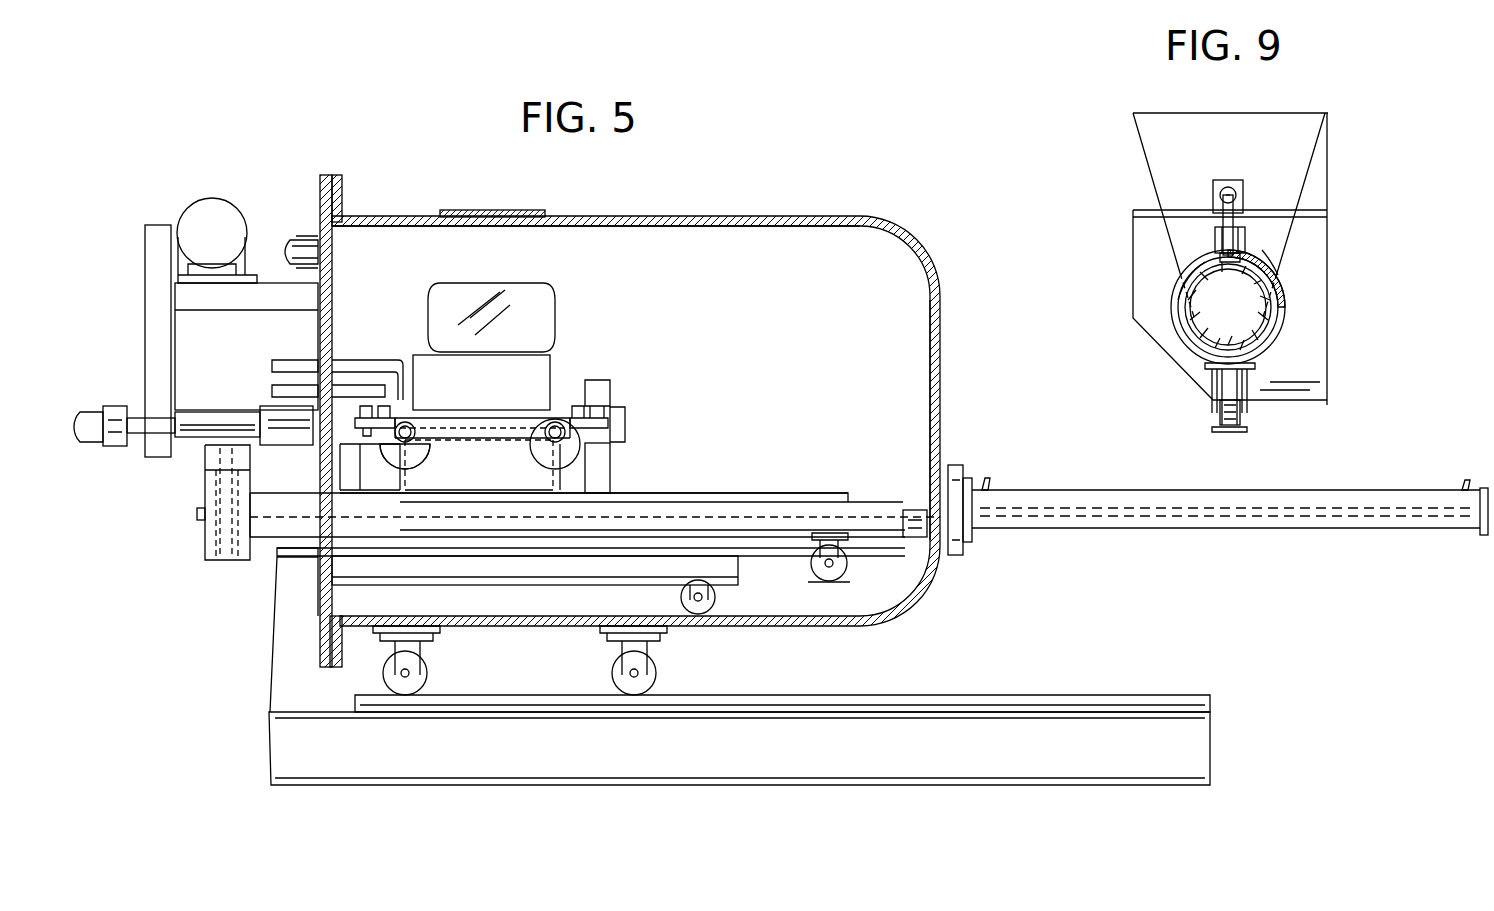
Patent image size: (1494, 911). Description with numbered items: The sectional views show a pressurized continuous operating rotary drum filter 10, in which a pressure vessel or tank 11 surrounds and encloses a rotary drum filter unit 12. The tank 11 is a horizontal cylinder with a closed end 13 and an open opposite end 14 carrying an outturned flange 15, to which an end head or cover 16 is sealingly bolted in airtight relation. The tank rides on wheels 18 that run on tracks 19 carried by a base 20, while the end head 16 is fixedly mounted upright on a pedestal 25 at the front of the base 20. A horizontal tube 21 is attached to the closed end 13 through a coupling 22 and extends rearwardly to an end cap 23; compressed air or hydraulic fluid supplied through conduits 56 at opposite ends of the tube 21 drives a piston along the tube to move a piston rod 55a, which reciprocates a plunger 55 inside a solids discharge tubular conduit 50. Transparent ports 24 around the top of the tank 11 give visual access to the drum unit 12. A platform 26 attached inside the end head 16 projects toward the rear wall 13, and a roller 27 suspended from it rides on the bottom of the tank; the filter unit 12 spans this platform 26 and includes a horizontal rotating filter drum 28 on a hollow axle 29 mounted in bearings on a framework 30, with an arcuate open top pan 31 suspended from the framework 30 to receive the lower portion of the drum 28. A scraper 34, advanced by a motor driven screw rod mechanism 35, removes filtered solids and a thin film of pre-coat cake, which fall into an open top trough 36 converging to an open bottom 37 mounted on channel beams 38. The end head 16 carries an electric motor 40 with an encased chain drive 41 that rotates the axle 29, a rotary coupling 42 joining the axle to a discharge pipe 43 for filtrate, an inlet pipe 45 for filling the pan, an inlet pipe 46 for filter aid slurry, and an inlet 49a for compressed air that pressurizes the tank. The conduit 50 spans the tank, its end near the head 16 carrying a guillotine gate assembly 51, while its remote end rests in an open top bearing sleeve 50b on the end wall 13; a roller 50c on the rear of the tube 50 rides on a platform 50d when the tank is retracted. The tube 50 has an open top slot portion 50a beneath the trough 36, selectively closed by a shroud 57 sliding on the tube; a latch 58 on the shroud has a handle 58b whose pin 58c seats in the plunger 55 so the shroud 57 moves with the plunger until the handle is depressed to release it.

In FIG. 5, the pressurized continuous operating rotary drum filter 10 is at (806, 216).
In FIG. 5, the tank 11 is at (572, 220).
In FIG. 5, the rotary drum filter unit 12 is at (540, 370).
In FIG. 5, the closed end 13 is at (940, 305).
In FIG. 5, the open opposite end 14 is at (338, 243).
In FIG. 5, the outturned flange 15 is at (342, 188).
In FIG. 5, the end head 16 is at (318, 195).
In FIG. 5, the wheels 18 is at (428, 676).
In FIG. 5, the tracks 19 is at (862, 712).
In FIG. 5, the base 20 is at (966, 760).
In FIG. 5, the horizontal tube 21 is at (1088, 495).
In FIG. 5, the coupling 22 is at (955, 468).
In FIG. 5, the end cap 23 is at (1484, 486).
In FIG. 5, the transparent ports 24 is at (492, 217).
In FIG. 5, the pedestal 25 is at (287, 630).
In FIG. 5, the platform 26 is at (630, 568).
In FIG. 5, the roller 27 is at (716, 598).
In FIG. 5, the filter drum 28 is at (405, 418).
In FIG. 5, the axle 29 is at (214, 420).
In FIG. 5, the framework 30 is at (550, 548).
In FIG. 5, the arcuate open top pan 31 is at (508, 486).
In FIG. 5, the scraper 34 is at (470, 422).
In FIG. 5, the motor driven screw rod mechanism 35 is at (563, 420).
In FIG. 9, the open top trough 36 is at (1327, 150).
In FIG. 9, the open bottom 37 is at (1178, 282).
In FIG. 9, the channel beams 38 is at (1320, 362).
In FIG. 5, the electric motor 40 is at (212, 210).
In FIG. 5, the encased chain drive 41 is at (170, 338).
In FIG. 5, the rotary coupling 42 is at (115, 440).
In FIG. 5, the discharge pipe 43 is at (88, 412).
In FIG. 5, the inlet pipe 45 is at (338, 360).
In FIG. 5, the inlet pipe 46 is at (363, 385).
In FIG. 5, the inlet 49a is at (296, 240).
In FIG. 5, the solids discharge tubular conduit 50 is at (318, 520).
In FIG. 9, the solids discharge tubular conduit 50 is at (1285, 320).
In FIG. 9, the open top slot portion 50a is at (1280, 290).
In FIG. 5, the open top bearing sleeve 50b is at (915, 537).
In FIG. 5, the roller 50c is at (847, 565).
In FIG. 9, the roller 50c is at (1240, 422).
In FIG. 5, the platform 50d is at (834, 580).
In FIG. 9, the platform 50d is at (1230, 432).
In FIG. 5, the guillotine gate assembly 51 is at (205, 562).
In FIG. 9, the plunger 55 is at (1228, 307).
In FIG. 9, the piston rod 55a is at (1240, 265).
In FIG. 5, the conduits 56 is at (990, 476).
In FIG. 5, the shroud 57 is at (808, 493).
In FIG. 9, the shroud 57 is at (1270, 252).
In FIG. 9, the latch 58 is at (1245, 215).
In FIG. 9, the handle 58b is at (1226, 195).
In FIG. 9, the pin 58c is at (1223, 314).